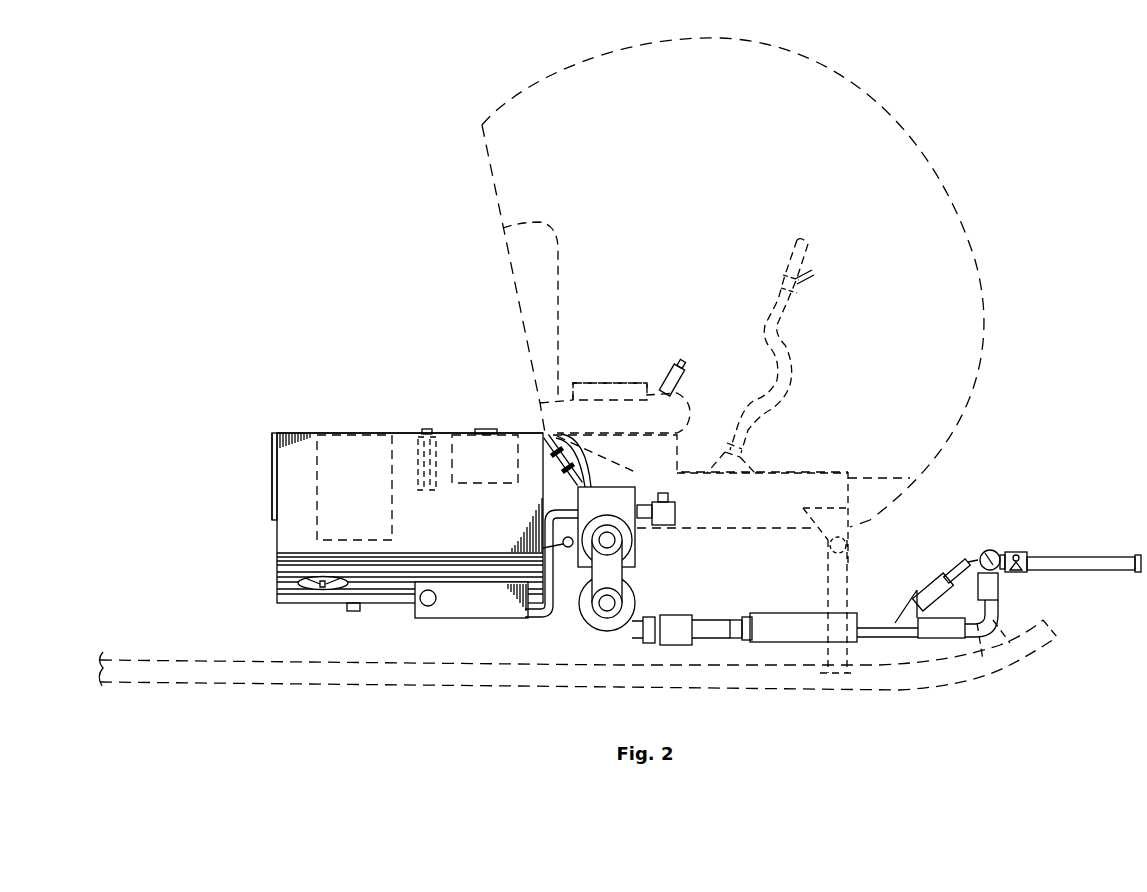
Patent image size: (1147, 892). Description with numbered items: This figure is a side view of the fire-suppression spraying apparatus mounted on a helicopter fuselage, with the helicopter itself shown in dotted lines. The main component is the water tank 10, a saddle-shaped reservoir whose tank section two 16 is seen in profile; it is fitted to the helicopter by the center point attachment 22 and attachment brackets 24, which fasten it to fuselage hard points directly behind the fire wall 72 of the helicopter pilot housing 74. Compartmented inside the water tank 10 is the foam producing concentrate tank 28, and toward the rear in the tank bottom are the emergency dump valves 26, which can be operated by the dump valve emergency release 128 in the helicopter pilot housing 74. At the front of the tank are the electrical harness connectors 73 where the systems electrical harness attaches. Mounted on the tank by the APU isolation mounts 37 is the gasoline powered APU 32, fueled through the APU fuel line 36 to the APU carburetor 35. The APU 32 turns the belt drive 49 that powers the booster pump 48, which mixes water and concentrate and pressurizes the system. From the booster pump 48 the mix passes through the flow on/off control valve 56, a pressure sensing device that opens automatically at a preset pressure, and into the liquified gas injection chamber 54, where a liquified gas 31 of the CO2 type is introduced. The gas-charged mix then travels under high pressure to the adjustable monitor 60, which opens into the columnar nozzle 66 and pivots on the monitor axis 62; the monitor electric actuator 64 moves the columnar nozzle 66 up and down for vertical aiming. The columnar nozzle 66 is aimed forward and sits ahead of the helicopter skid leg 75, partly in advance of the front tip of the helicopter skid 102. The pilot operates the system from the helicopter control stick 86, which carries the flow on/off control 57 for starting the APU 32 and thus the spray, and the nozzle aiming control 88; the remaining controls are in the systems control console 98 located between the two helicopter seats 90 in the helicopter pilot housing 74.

The water tank 10 is at (290, 538).
The tank section two 16 is at (297, 484).
The center point attachment 22 is at (352, 612).
The attachment brackets 24 is at (272, 434).
The emergency dump valves 26 is at (320, 588).
The foam producing concentrate tank 28 is at (355, 458).
The liquified gas 31 is at (472, 602).
The APU 32 is at (620, 495).
The APU carburetor 35 is at (675, 512).
The APU fuel line 36 is at (482, 428).
The APU isolation mounts 37 is at (565, 547).
The booster pump 48 is at (627, 576).
The belt drive 49 is at (618, 595).
The liquified gas injection chamber 54 is at (780, 620).
The flow on/off control valve 56 is at (680, 622).
The flow on/off control 57 is at (808, 277).
The adjustable monitor 60 is at (1018, 552).
The monitor axis 62 is at (990, 548).
The monitor electric actuator 64 is at (932, 578).
The columnar nozzle 66 is at (1085, 557).
The fire wall 72 is at (503, 240).
The electrical harness connectors 73 is at (545, 437).
The helicopter pilot housing 74 is at (917, 137).
The helicopter skid leg 75 is at (838, 566).
The helicopter control stick 86 is at (795, 365).
The nozzle aiming control 88 is at (812, 272).
The helicopter seats 90 is at (560, 284).
The systems control console 98 is at (600, 382).
The helicopter skid 102 is at (422, 678).
The dump valve emergency release 128 is at (682, 360).